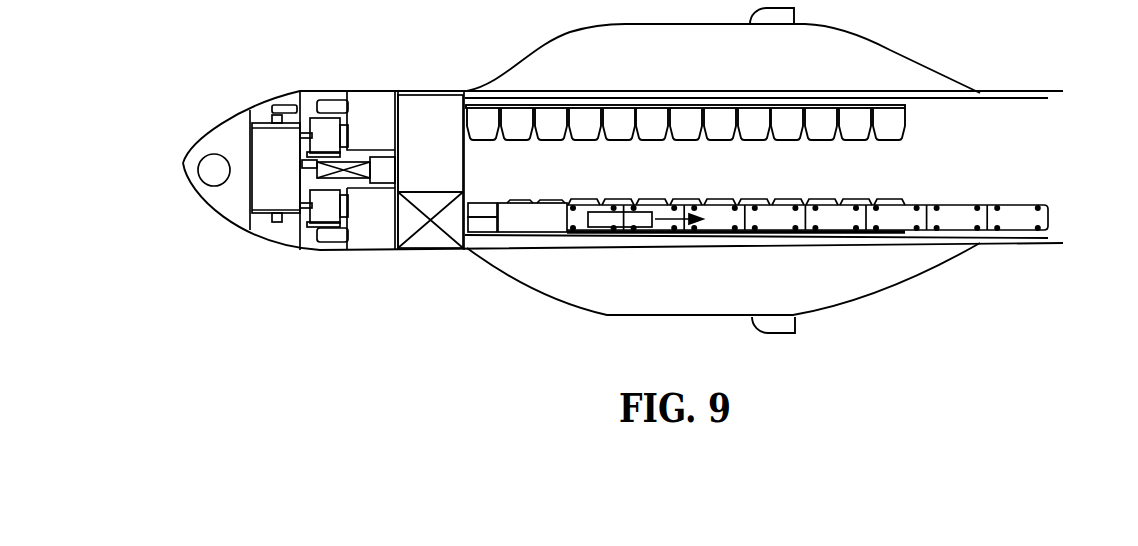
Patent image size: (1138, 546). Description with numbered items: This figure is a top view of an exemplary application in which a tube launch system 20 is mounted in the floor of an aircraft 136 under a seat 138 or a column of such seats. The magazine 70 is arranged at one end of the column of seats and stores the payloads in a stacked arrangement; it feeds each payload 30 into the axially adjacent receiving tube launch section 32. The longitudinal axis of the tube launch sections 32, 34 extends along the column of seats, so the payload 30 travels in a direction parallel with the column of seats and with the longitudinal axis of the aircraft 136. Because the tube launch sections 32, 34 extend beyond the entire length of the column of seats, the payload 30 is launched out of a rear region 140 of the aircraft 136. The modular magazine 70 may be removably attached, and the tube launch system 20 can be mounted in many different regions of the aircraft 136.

The aircraft 136 is at (252, 34).
The rear region 140 is at (1034, 136).
The magazine 70 is at (515, 218).
The payload 30 is at (598, 217).
The receiving tube launch section 32 is at (612, 233).
The tube launch section 34 is at (658, 225).
The seat 138 is at (725, 233).
The tube launch system 20 is at (876, 262).